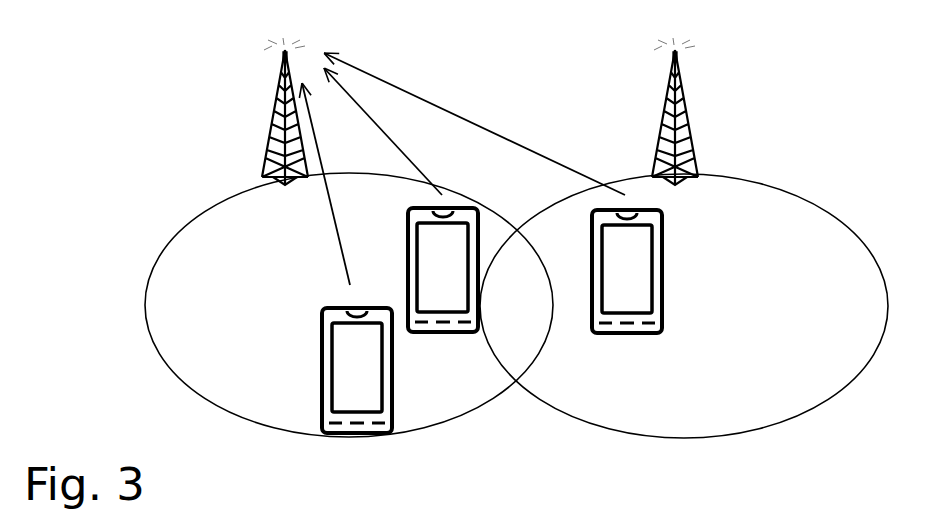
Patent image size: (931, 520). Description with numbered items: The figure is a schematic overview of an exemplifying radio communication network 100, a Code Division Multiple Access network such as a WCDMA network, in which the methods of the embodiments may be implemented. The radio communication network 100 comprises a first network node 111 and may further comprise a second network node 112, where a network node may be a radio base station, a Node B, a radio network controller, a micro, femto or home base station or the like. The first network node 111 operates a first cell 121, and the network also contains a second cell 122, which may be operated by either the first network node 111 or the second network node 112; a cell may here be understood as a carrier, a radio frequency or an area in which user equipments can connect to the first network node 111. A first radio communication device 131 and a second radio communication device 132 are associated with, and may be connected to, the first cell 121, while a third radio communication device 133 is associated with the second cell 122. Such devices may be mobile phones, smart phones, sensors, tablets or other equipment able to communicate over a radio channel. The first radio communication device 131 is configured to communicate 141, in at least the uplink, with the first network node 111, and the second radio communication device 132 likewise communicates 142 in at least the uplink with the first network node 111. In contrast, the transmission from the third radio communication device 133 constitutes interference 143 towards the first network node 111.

The radio communication network 100 is at (118, 246).
The first network node 111 is at (258, 111).
The second network node 112 is at (706, 111).
The first cell 121 is at (185, 343).
The second cell 122 is at (640, 397).
The first radio communication device 131 is at (443, 270).
The second radio communication device 132 is at (357, 370).
The third radio communication device 133 is at (627, 271).
The communication of the first radio communication device 141 is at (385, 131).
The communication of the second radio communication device 142 is at (321, 184).
The interference 143 is at (474, 124).